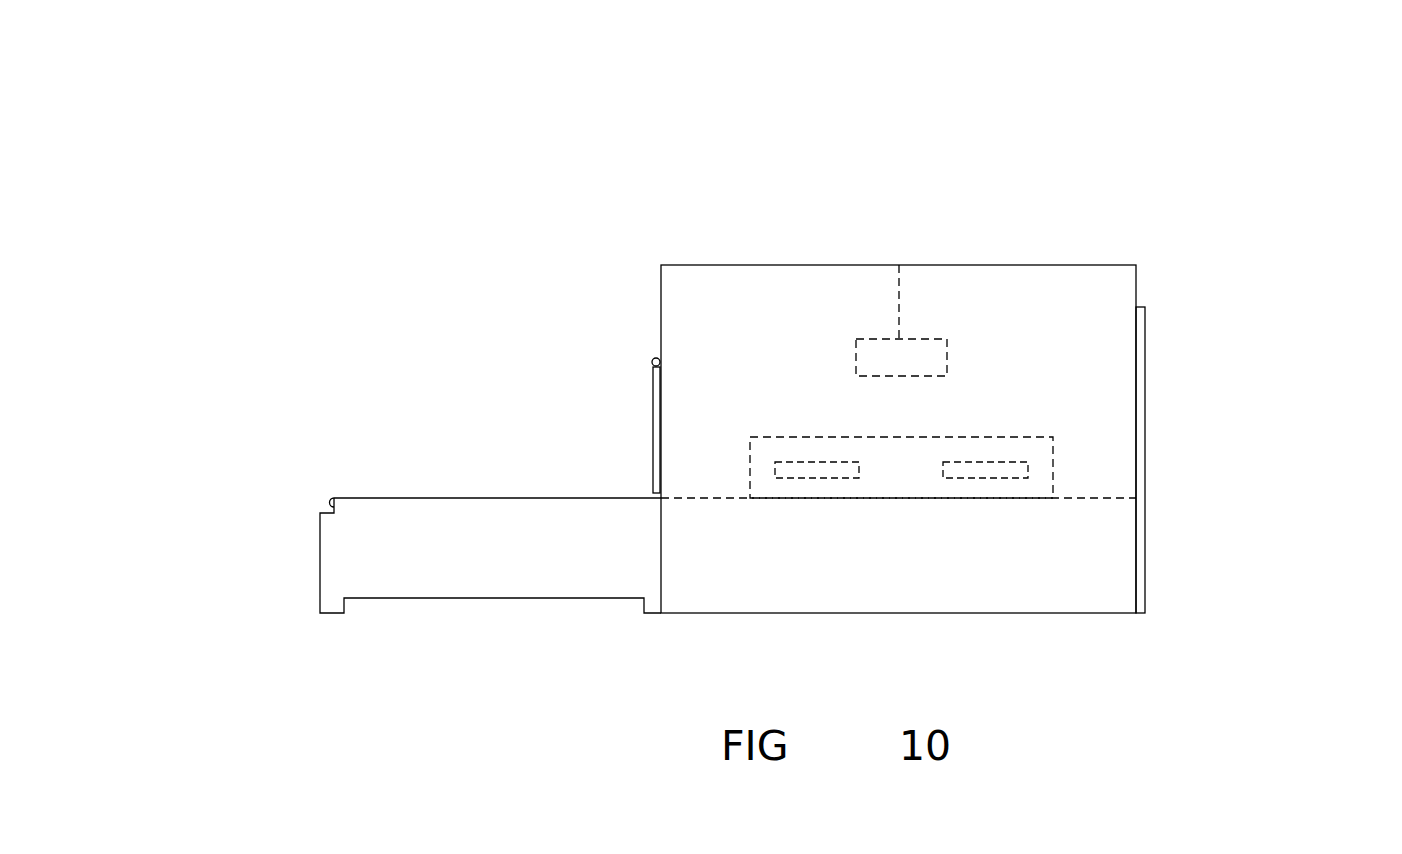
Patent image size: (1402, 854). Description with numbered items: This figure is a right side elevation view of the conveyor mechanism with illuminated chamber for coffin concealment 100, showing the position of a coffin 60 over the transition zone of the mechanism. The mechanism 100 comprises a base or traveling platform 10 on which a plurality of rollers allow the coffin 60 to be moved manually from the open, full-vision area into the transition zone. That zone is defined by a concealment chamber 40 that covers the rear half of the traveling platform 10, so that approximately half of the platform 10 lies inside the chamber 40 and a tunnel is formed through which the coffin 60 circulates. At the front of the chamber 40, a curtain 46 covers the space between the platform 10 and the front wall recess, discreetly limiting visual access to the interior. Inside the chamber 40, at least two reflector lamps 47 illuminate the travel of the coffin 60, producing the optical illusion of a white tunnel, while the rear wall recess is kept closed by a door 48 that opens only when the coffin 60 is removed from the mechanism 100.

The conveyor mechanism with illuminated chamber for coffin concealment 100 is at (668, 252).
The concealment chamber 40 is at (1166, 374).
The door 48 is at (1165, 493).
The reflector lamp 47 is at (928, 352).
The coffin 60 is at (748, 447).
The curtain 46 is at (640, 464).
The base or traveling platform 10 is at (310, 584).